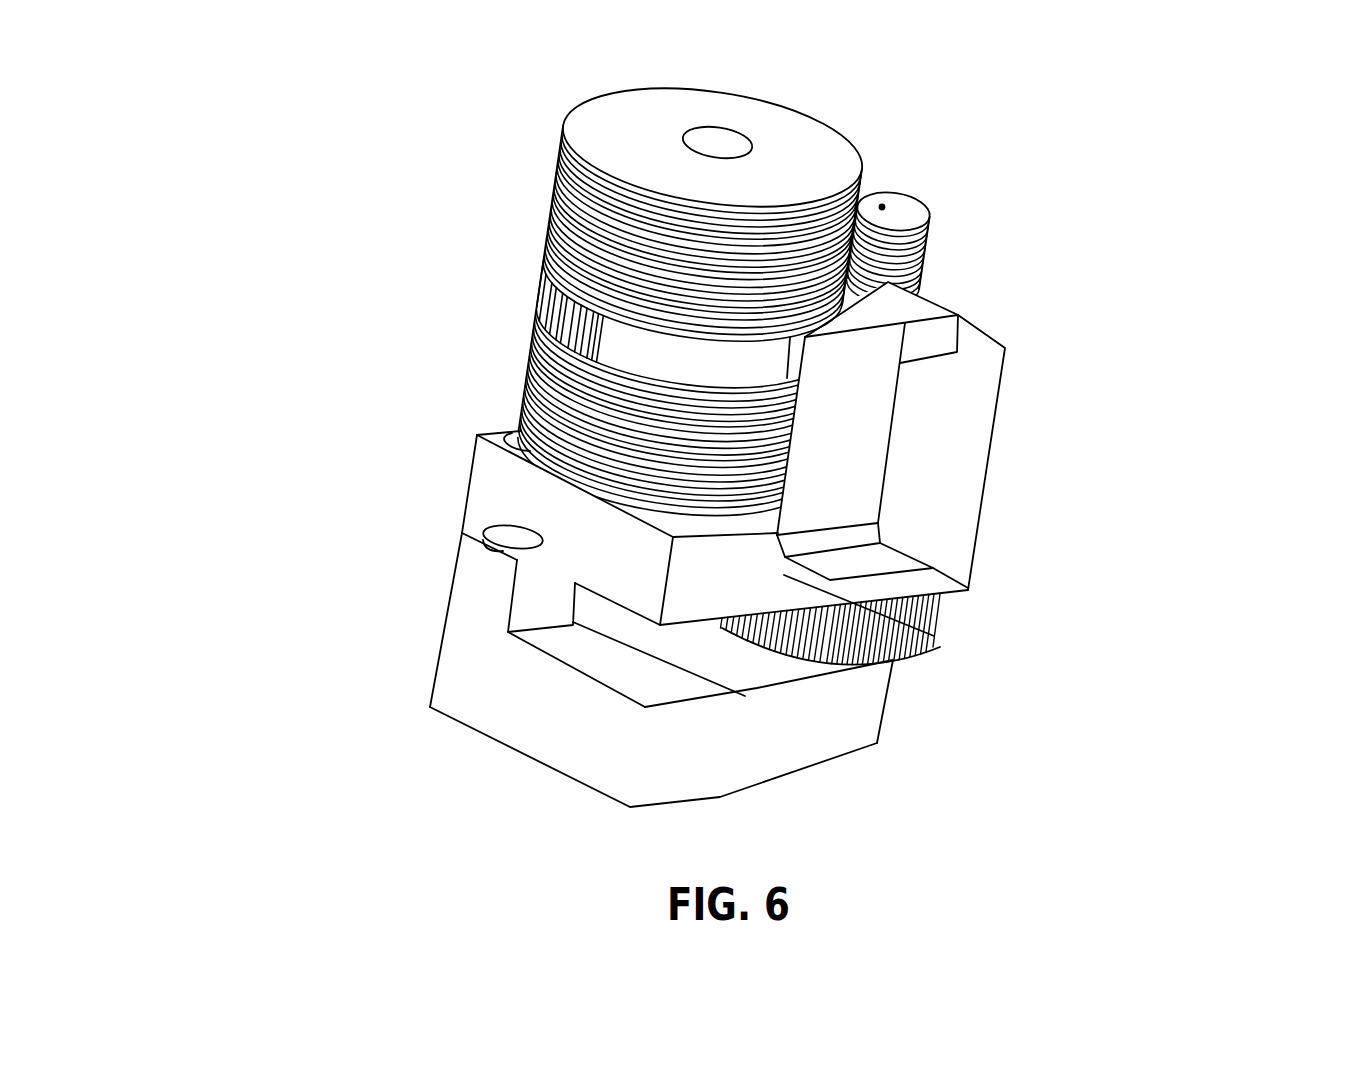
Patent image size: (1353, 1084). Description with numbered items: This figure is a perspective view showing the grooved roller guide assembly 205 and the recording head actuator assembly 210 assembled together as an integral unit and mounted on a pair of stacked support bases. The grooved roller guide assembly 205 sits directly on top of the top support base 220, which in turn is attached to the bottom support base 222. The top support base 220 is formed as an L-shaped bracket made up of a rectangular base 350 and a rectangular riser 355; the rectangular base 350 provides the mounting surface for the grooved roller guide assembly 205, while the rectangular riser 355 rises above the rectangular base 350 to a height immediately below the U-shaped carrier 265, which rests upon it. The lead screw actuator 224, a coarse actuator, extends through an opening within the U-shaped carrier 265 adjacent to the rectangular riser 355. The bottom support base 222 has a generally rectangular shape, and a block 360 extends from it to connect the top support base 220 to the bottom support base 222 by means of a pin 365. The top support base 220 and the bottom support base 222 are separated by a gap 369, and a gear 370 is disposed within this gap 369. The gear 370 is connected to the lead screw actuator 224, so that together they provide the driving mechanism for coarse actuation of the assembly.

The grooved roller guide assembly 205 is at (552, 382).
The recording head actuator assembly 210 is at (548, 288).
The top support base 220 is at (934, 634).
The bottom support base 222 is at (557, 708).
The lead screw actuator 224 is at (930, 222).
The U-shaped carrier 265 is at (938, 306).
The rectangular base 350 is at (515, 507).
The rectangular riser 355 is at (967, 392).
The block 360 is at (463, 608).
The pin 365 is at (510, 553).
The gap 369 is at (717, 670).
The gear 370 is at (935, 631).